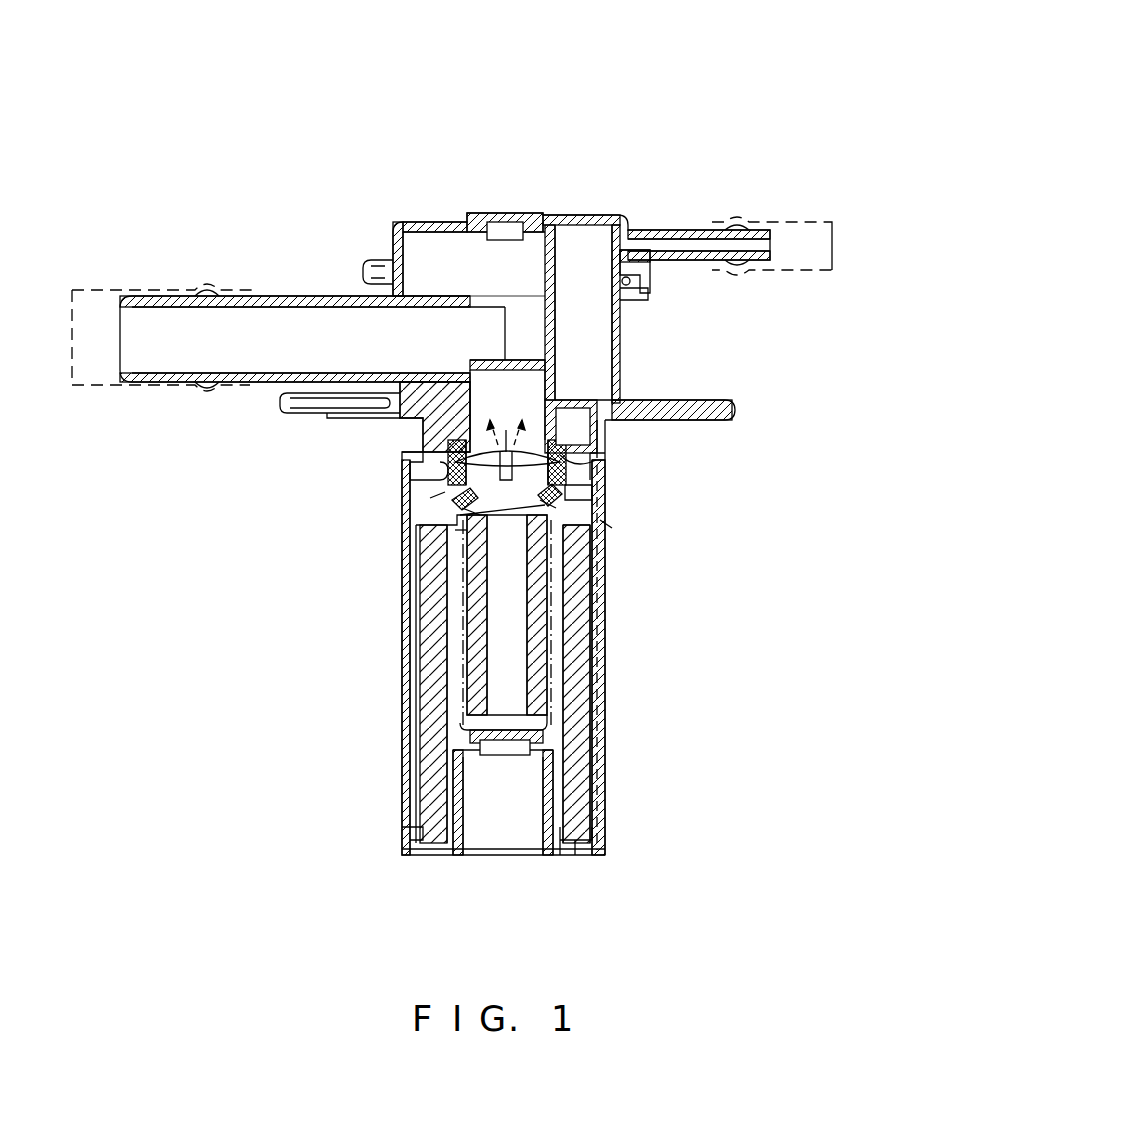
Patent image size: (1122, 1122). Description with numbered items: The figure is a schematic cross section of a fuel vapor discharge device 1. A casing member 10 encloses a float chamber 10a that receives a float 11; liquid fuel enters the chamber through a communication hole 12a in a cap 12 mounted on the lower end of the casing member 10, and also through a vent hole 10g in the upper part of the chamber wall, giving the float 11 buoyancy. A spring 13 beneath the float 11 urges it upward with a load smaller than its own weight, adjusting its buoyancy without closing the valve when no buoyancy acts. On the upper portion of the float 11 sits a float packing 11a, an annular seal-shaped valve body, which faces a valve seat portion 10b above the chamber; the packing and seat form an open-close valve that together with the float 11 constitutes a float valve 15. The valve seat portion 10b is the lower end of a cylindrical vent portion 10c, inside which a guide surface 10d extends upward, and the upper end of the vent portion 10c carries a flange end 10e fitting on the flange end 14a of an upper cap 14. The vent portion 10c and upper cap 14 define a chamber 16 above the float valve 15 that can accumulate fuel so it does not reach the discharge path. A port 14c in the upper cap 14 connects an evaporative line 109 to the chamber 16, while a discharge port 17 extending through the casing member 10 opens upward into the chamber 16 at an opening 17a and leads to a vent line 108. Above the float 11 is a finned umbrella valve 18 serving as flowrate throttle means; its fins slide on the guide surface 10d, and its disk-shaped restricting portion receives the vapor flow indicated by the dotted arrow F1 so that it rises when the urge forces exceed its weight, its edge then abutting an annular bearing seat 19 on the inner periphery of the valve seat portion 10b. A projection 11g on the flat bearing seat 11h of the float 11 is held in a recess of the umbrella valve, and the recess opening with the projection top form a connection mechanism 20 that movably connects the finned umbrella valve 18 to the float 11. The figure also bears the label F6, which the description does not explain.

The fuel vapor discharge device 1 is at (462, 138).
The casing member 10 is at (606, 600).
The float chamber 10a is at (418, 462).
The valve seat portion 10b is at (445, 472).
The vent portion 10c is at (613, 384).
The guide surface 10d is at (556, 382).
The flange end 10e is at (632, 300).
The vent hole 10g is at (605, 525).
The float 11 is at (585, 636).
The float packing 11a is at (455, 516).
The projection 11g is at (468, 530).
The bearing seat 11h is at (592, 490).
The cap 12 is at (446, 857).
The communication hole 12a is at (580, 857).
The spring 13 is at (545, 677).
The upper cap 14 is at (592, 215).
The flange end 14a is at (630, 275).
The port 14c is at (700, 230).
The float valve 15 is at (627, 450).
The chamber 16 is at (566, 320).
The discharge port 17 is at (262, 297).
The opening 17a is at (482, 296).
The finned umbrella valve 18 is at (562, 456).
The annular bearing seat 19 is at (575, 468).
The connection mechanism 20 is at (600, 510).
The vent line 108 is at (93, 288).
The evaporative line 109 is at (795, 224).
The flow arrow F1 is at (506, 415).
The fuel flow F6 is at (625, 520).